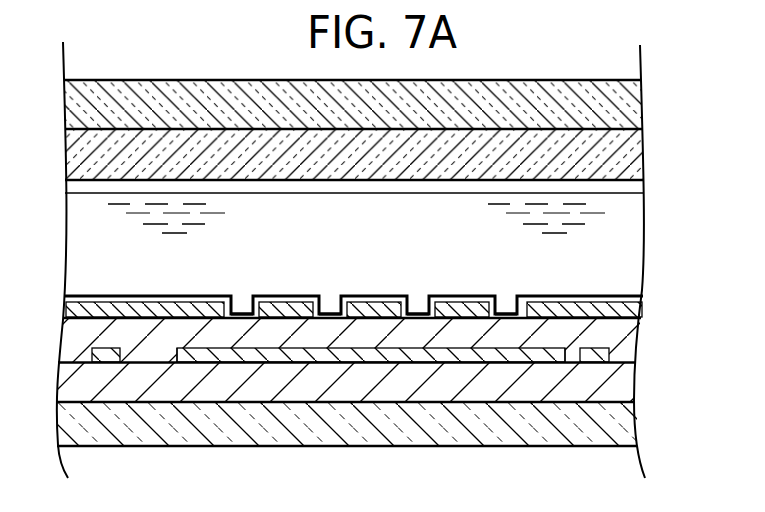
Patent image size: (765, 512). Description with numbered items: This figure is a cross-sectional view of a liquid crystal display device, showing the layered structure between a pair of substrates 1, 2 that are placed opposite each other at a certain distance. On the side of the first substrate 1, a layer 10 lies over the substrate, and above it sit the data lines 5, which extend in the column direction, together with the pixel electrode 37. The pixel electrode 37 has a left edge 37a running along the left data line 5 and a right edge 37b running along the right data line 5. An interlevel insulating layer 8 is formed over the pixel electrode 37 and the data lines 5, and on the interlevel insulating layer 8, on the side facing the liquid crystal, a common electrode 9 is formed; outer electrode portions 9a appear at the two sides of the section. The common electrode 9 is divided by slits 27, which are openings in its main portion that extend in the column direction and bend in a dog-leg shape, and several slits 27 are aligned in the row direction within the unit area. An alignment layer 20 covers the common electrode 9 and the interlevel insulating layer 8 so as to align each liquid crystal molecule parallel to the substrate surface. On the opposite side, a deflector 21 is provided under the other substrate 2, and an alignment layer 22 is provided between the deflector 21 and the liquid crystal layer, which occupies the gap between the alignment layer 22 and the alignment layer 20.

The first substrate 1 is at (622, 427).
The substrate 2 is at (633, 107).
The data line 5 is at (668, 325).
The interlevel insulating layer 8 is at (620, 349).
The common electrode 9 is at (455, 308).
The electrode 9a is at (575, 310).
The insulating layer 10 is at (622, 386).
The alignment layer 20 is at (637, 299).
The deflector 21 is at (633, 155).
The alignment layer 22 is at (633, 187).
The slit 27 is at (503, 299).
The pixel electrode 37 is at (360, 357).
The left edge 37a is at (198, 358).
The right edge 37b is at (555, 360).